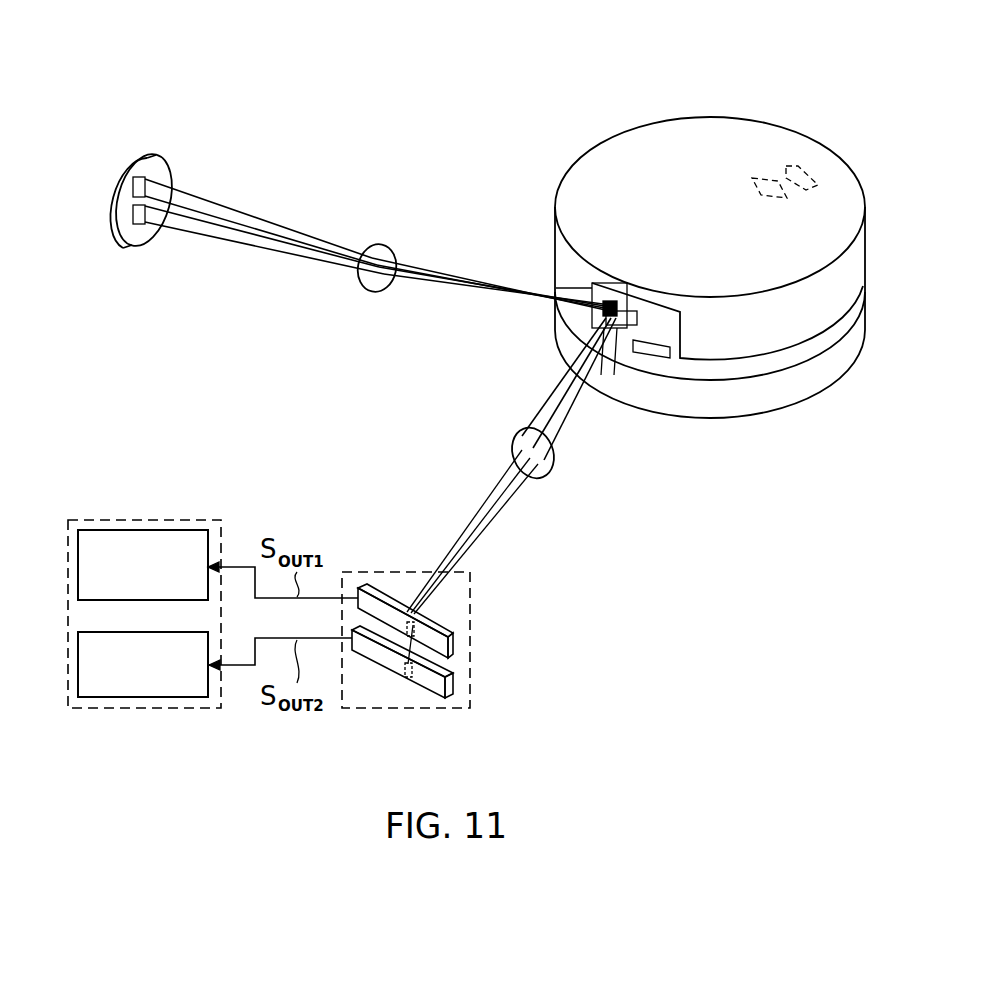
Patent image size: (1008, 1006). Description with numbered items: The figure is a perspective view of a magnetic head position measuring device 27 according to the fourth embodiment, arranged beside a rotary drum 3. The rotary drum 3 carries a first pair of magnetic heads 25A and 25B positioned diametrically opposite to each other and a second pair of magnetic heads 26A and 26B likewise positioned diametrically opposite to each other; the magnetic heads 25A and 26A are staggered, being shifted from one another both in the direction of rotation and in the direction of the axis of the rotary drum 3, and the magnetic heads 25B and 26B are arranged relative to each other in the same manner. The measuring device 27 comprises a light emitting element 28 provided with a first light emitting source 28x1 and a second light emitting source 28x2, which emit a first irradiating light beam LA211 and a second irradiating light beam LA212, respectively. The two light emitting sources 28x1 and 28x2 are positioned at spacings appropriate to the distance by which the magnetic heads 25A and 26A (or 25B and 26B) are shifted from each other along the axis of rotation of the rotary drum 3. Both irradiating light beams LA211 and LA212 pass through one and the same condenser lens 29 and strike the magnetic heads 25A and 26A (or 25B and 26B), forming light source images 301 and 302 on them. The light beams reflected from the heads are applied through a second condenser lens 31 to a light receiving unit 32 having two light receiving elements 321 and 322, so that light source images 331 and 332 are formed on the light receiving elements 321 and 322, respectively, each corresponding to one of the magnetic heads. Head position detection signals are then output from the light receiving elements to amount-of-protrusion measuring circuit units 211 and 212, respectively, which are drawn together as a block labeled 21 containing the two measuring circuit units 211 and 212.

The magnetic head position measuring device 27 is at (565, 28).
The light emitting element 28 is at (125, 168).
The first light emitting source 28x1 is at (146, 176).
The second light emitting source 28x2 is at (139, 224).
The first irradiating light beam LA211 is at (235, 208).
The second irradiating light beam LA212 is at (227, 233).
The condenser lens 29 is at (378, 245).
The rotary drum 3 is at (856, 338).
The light source image 302 is at (622, 300).
The light source image 301 is at (608, 375).
The magnetic head 25A is at (628, 328).
The magnetic head 26A is at (658, 360).
The magnetic head 25B is at (803, 166).
The magnetic head 26B is at (752, 178).
The condenser lens 31 is at (546, 480).
The light receiving unit 32 is at (470, 710).
The light receiving element 321 is at (455, 645).
The light receiving element 322 is at (455, 690).
The light source image 331 is at (410, 614).
The light source image 332 is at (408, 680).
The A.O.P. measuring unit 21 is at (68, 660).
The amount-of-protrusion measuring circuit unit 211 is at (200, 521).
The amount-of-protrusion measuring circuit unit 212 is at (186, 700).